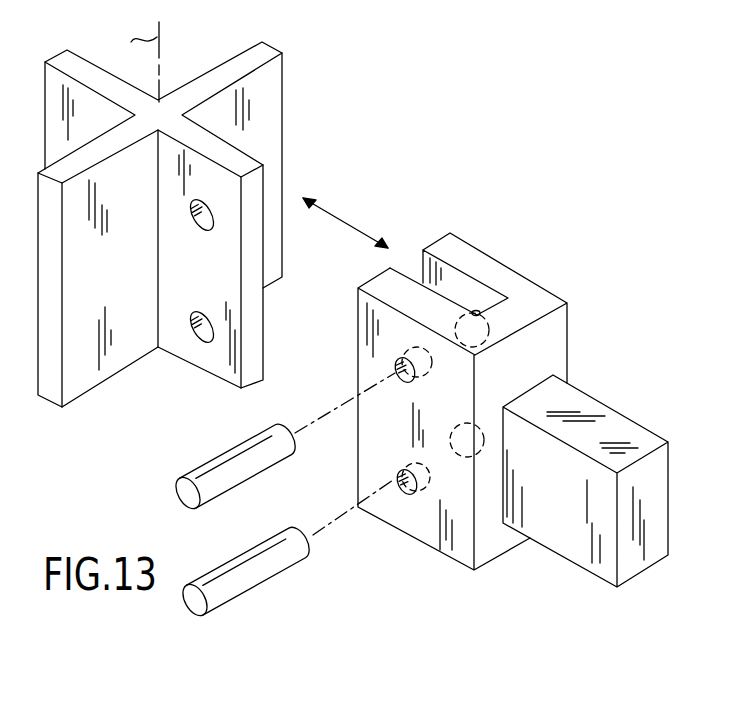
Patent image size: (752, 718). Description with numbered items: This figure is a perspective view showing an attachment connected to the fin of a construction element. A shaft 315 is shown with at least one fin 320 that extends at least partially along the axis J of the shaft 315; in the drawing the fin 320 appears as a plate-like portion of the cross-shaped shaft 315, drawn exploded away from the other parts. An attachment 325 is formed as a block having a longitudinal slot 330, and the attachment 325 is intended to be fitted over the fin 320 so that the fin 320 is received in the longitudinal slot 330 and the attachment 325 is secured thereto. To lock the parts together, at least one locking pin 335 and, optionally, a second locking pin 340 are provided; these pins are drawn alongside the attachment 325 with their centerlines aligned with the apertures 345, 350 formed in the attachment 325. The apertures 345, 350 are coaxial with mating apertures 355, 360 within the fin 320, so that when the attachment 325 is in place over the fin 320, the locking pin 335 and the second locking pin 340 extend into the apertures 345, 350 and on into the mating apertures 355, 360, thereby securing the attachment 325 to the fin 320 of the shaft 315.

The shaft 315 is at (168, 108).
The fin 320 is at (240, 158).
The attachment 325 is at (457, 372).
The longitudinal slot 330 is at (418, 263).
The locking pin 335 is at (203, 472).
The second locking pin 340 is at (217, 583).
The aperture 345 is at (395, 372).
The aperture 350 is at (395, 480).
The mating aperture 355 is at (195, 226).
The mating aperture 360 is at (195, 337).